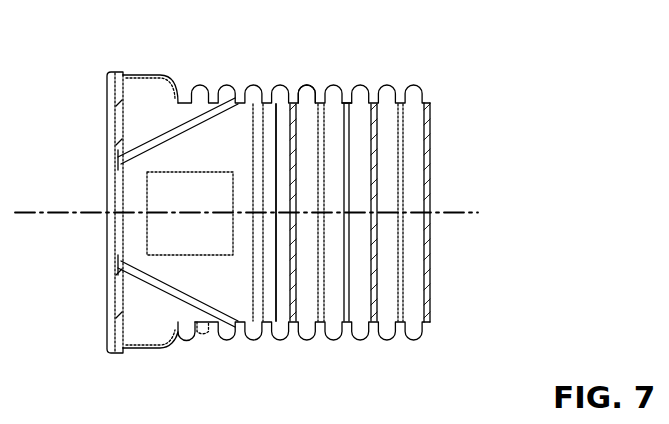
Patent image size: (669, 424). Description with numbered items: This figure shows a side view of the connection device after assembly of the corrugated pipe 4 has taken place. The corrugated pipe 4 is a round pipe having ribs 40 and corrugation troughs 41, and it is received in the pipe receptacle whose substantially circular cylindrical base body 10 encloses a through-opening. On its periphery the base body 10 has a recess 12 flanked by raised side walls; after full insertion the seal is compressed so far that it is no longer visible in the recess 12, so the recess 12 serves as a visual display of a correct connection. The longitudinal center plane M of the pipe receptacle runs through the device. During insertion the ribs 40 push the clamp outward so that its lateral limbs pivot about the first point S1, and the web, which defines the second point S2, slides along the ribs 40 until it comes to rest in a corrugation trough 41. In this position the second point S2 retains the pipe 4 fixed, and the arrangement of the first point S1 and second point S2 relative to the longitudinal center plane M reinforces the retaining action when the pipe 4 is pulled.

The corrugated pipe 4 is at (245, 211).
The first point S1 is at (107, 153).
The second point S2 is at (237, 87).
The base body 10 is at (140, 348).
The recess 12 is at (187, 323).
The rib 40 is at (303, 86).
The corrugation trough 41 is at (347, 87).
The longitudinal center plane M is at (470, 214).